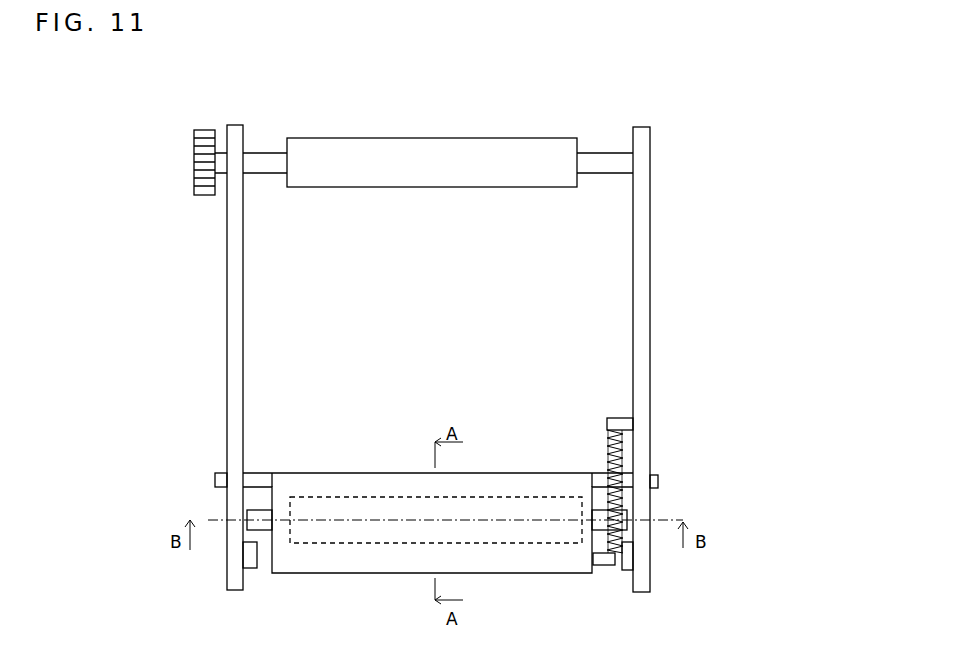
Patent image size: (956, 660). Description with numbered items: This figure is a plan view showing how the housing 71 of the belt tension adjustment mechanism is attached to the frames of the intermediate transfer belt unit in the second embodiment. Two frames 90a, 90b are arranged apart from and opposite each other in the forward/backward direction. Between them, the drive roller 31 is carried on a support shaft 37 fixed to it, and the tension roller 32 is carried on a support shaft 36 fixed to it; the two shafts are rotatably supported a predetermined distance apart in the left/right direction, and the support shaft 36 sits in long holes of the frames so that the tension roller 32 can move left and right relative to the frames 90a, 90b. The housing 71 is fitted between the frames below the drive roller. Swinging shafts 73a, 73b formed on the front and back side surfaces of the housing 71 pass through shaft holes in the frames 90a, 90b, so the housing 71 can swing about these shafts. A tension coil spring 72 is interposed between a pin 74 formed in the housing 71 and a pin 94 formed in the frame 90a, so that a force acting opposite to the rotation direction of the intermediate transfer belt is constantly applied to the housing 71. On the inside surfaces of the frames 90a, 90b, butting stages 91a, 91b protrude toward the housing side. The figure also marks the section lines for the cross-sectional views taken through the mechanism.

The drive roller 31 is at (417, 157).
The tension roller 32 is at (328, 537).
The support shaft 36 is at (263, 520).
The support shaft 37 is at (600, 163).
The housing 71 is at (340, 487).
The tension coil spring 72 is at (606, 456).
The swinging shaft 73a is at (658, 482).
The swinging shaft 73b is at (215, 480).
The pin 74 is at (607, 568).
The frame 90a is at (650, 299).
The frame 90b is at (227, 295).
The butting stage 91a is at (628, 557).
The butting stage 91b is at (250, 557).
The pin 94 is at (616, 418).